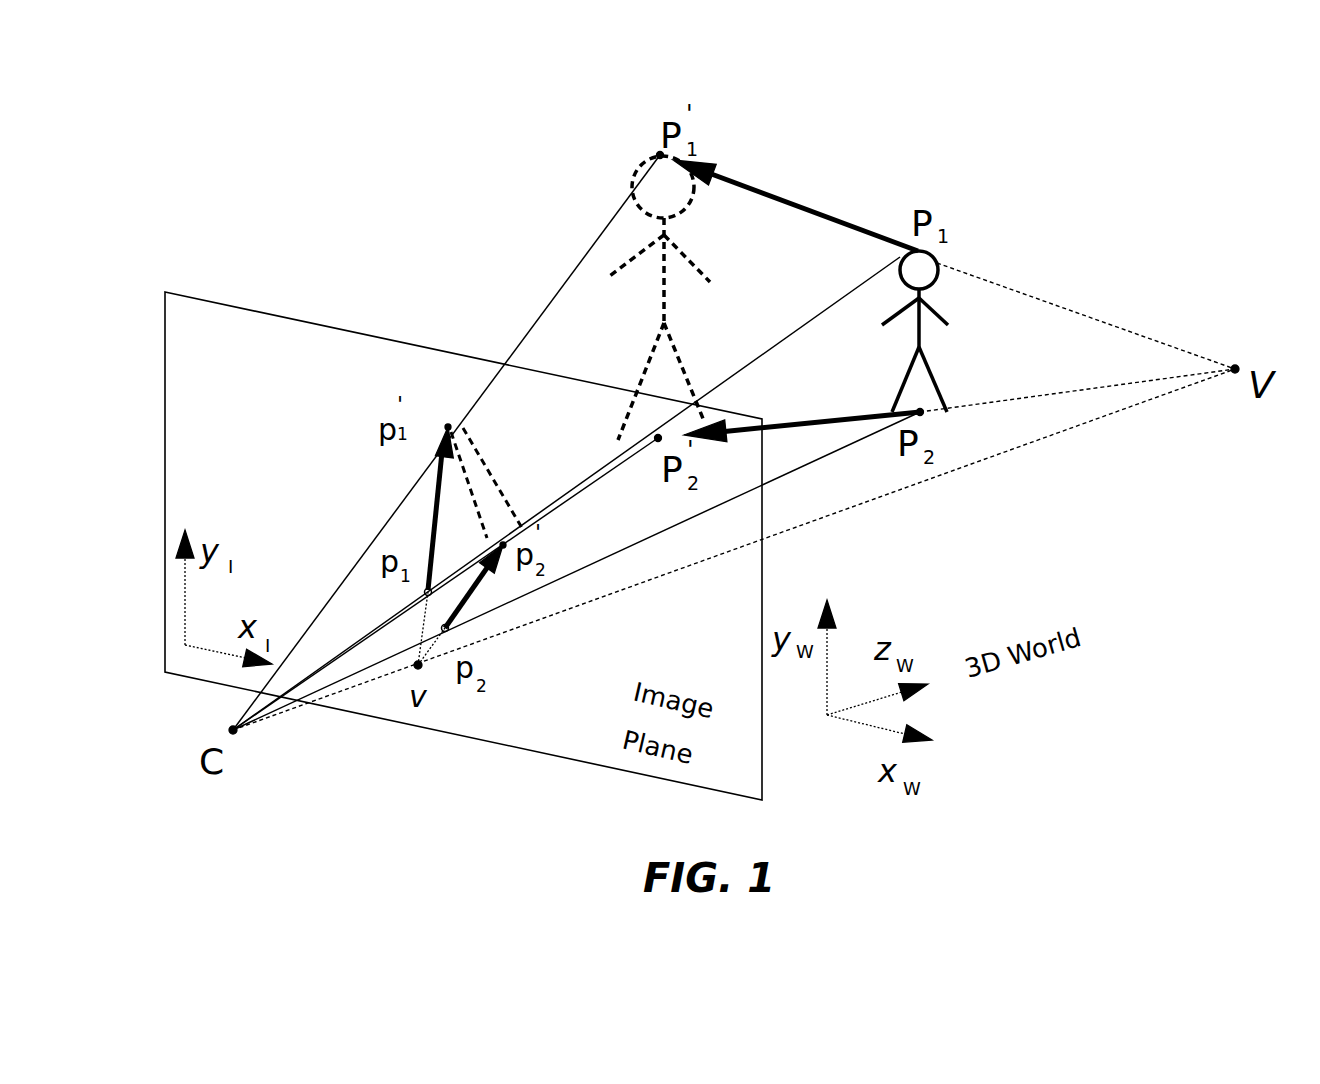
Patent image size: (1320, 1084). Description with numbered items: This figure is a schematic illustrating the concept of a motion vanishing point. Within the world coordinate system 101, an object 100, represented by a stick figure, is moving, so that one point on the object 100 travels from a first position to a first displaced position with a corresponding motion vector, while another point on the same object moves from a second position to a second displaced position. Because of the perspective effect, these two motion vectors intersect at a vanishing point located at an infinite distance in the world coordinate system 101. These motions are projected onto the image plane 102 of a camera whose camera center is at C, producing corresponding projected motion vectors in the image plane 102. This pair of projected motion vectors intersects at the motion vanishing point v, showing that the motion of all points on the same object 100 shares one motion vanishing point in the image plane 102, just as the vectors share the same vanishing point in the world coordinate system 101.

The object 100 is at (505, 388).
The 3D world coordinate system 101 is at (887, 525).
The image plane 102 is at (505, 668).